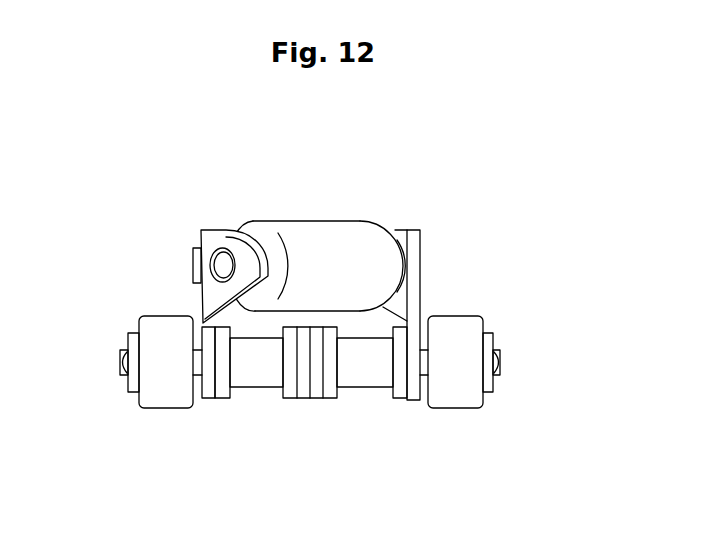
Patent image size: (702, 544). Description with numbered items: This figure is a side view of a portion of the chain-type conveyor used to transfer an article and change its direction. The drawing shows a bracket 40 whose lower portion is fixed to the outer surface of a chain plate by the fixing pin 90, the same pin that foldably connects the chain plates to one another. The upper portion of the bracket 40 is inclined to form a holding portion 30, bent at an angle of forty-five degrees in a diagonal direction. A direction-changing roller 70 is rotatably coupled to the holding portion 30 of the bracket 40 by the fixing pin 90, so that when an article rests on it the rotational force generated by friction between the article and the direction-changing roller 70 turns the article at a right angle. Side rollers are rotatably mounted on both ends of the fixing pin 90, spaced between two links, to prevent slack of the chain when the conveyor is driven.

The holding portion 30 is at (213, 238).
The bracket 40 is at (187, 295).
The direction-changing roller 70 is at (332, 230).
The fixing pin 90 is at (498, 377).